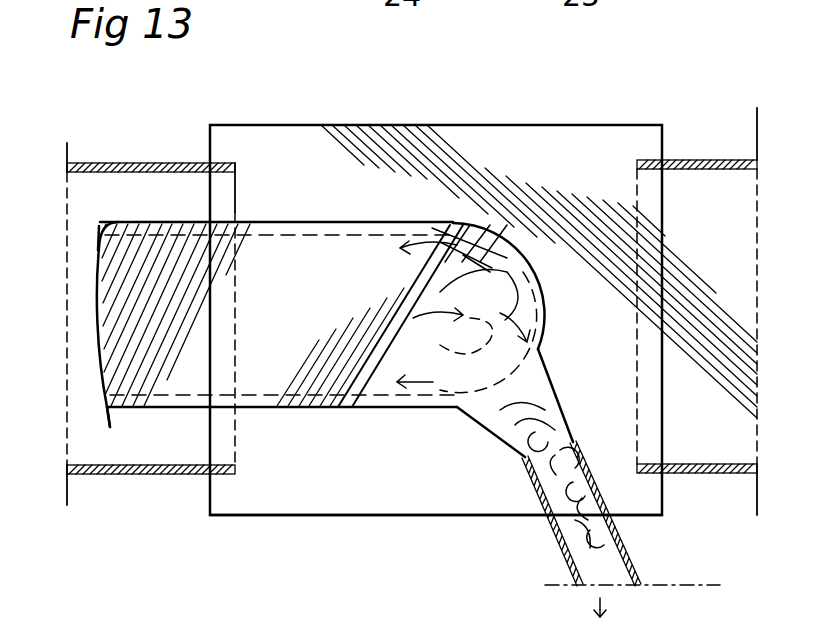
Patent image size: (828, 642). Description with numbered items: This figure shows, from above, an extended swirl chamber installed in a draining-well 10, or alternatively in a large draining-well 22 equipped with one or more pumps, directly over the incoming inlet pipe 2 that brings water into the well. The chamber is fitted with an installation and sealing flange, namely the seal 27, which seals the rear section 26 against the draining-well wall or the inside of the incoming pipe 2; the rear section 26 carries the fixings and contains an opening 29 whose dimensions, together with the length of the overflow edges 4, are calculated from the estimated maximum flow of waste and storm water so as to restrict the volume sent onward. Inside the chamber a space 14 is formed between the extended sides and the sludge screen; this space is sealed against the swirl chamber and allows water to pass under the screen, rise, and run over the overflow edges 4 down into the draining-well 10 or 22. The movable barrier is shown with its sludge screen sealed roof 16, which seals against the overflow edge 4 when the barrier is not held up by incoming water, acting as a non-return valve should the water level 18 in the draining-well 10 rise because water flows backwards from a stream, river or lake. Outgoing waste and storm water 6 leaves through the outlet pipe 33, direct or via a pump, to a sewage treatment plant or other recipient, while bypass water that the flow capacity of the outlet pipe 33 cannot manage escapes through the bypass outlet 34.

The inlet pipe 2 is at (188, 165).
The overflow edge 4 is at (377, 235).
The outgoing waste and storm water 6 is at (600, 598).
The draining-well 10 is at (490, 106).
The space in swirl chamber 14 is at (325, 290).
The sludge screen sealed roof 16 is at (347, 362).
The water level in draining-well 18 is at (362, 147).
The large draining-well 22 is at (190, 540).
The rear section 26 is at (110, 427).
The seal for rear section 27 is at (102, 245).
The opening in rear section 29 is at (100, 226).
The outlet pipe from draining-well 33 is at (555, 545).
The bypass water outlet 34 is at (682, 160).